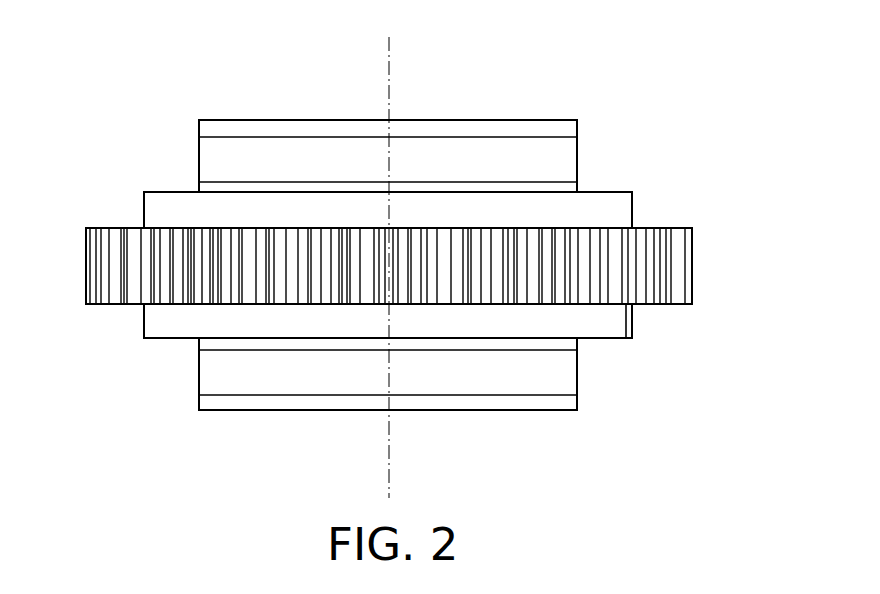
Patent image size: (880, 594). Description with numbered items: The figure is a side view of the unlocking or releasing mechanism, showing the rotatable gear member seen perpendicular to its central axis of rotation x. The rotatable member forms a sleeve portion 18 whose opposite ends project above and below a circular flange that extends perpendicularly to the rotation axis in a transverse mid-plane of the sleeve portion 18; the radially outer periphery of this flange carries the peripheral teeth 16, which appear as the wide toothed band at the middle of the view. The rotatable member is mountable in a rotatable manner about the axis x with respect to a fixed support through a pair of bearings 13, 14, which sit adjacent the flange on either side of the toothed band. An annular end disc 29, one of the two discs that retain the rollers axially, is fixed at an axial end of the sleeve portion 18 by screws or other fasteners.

The bearing 13 is at (632, 215).
The bearing 14 is at (636, 318).
The radially outer peripheral teeth 16 is at (692, 276).
The sleeve portion 18 is at (577, 162).
The annular end disc 29 is at (265, 412).